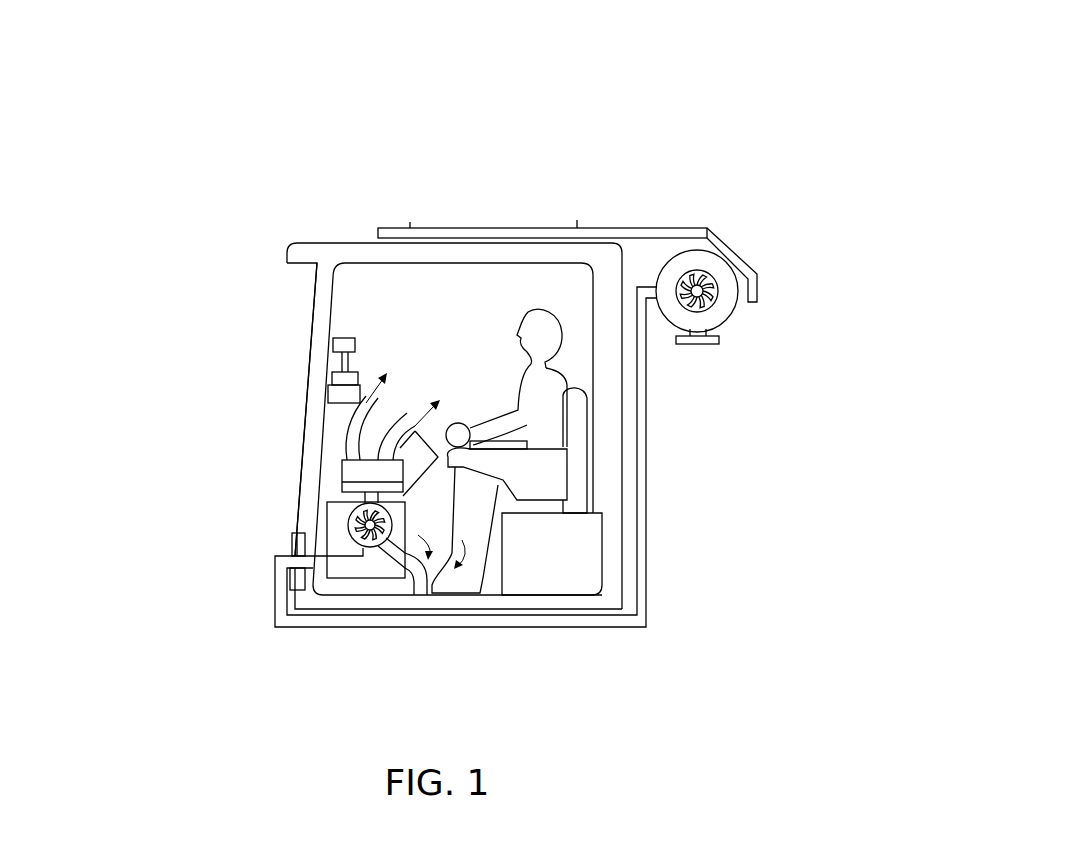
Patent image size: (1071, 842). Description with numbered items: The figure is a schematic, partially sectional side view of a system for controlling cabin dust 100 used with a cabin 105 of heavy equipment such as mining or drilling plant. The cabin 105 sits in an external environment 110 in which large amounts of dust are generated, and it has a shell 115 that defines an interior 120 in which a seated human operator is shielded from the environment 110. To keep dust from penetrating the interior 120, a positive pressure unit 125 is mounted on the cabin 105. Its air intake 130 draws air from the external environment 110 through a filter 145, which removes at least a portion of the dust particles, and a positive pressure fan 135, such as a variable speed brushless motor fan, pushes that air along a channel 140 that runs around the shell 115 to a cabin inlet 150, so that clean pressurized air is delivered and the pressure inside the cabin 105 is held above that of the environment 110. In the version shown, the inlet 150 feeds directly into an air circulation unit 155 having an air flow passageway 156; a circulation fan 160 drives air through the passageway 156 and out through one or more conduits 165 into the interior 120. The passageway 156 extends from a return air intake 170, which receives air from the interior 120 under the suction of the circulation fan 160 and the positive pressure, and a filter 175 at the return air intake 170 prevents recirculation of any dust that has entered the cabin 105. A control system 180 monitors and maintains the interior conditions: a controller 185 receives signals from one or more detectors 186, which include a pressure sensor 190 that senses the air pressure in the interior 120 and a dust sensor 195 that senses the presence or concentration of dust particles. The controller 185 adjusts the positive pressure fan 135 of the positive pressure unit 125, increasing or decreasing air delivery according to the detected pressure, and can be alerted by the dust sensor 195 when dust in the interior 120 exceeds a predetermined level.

The system for controlling cabin dust 100 is at (768, 90).
The cabin 105 is at (368, 190).
The external environment 110 is at (176, 330).
The shell 115 is at (323, 249).
The interior 120 is at (490, 290).
The positive pressure unit 125 is at (755, 315).
The air intake 130 is at (701, 357).
The positive pressure fan 135 is at (698, 268).
The channel 140 is at (647, 533).
The filter 145 is at (712, 344).
The cabin inlet 150 is at (291, 544).
The air circulation unit 155 is at (417, 505).
The air flow passageway 156 is at (348, 521).
The circulation fan 160 is at (371, 540).
The conduits 165 is at (362, 428).
The return air intake 170 is at (427, 586).
The filter 175 is at (414, 570).
The control system 180 is at (313, 404).
The controller 185 is at (328, 394).
The detectors 186 is at (363, 360).
The pressure sensor 190 is at (332, 379).
The dust sensor 195 is at (333, 345).